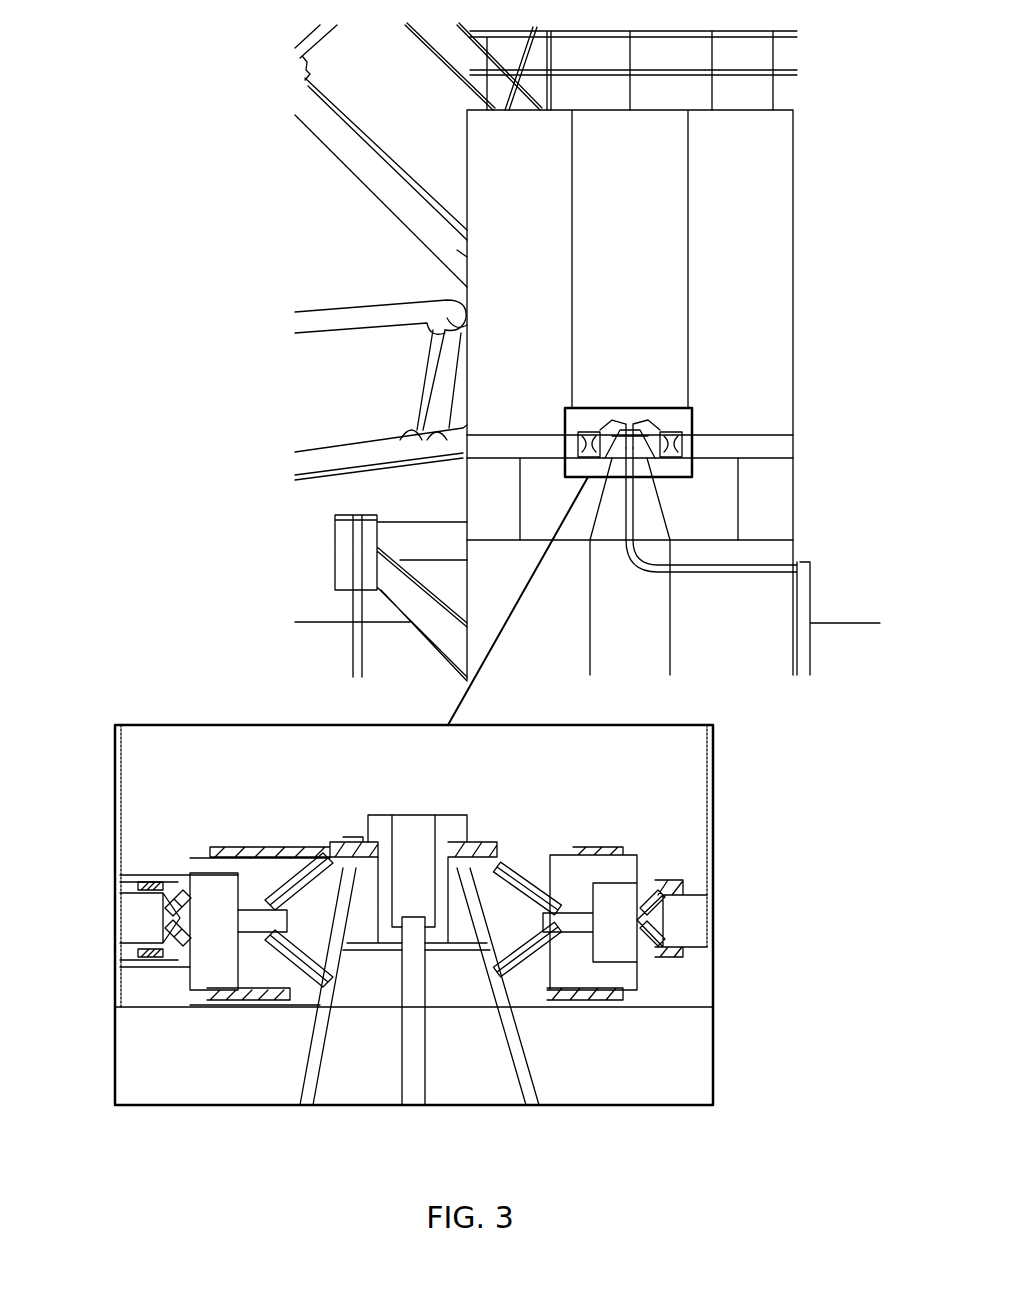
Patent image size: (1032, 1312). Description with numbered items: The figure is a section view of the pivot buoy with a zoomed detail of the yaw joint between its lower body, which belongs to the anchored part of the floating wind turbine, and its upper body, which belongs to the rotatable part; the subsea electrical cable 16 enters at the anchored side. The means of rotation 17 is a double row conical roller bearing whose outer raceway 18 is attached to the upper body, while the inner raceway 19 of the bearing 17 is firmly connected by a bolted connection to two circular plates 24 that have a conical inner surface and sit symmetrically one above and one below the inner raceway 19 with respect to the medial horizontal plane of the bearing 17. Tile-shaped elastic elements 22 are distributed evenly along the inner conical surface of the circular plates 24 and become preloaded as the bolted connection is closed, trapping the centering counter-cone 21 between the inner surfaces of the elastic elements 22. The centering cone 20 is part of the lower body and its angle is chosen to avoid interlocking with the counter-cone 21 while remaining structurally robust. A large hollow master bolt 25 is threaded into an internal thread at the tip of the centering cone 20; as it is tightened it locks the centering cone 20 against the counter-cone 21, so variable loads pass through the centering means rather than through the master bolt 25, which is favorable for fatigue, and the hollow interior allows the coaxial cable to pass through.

The subsea electrical cable 16 is at (803, 662).
The means of rotation 17 is at (140, 872).
The outer raceway 18 is at (143, 917).
The inner raceway 19 is at (192, 953).
The centering cone 20 is at (315, 1057).
The centering counter-cone 21 is at (340, 905).
The elastic elements 22 is at (532, 948).
The circular plates 24 is at (232, 975).
The master bolt 25 is at (382, 835).